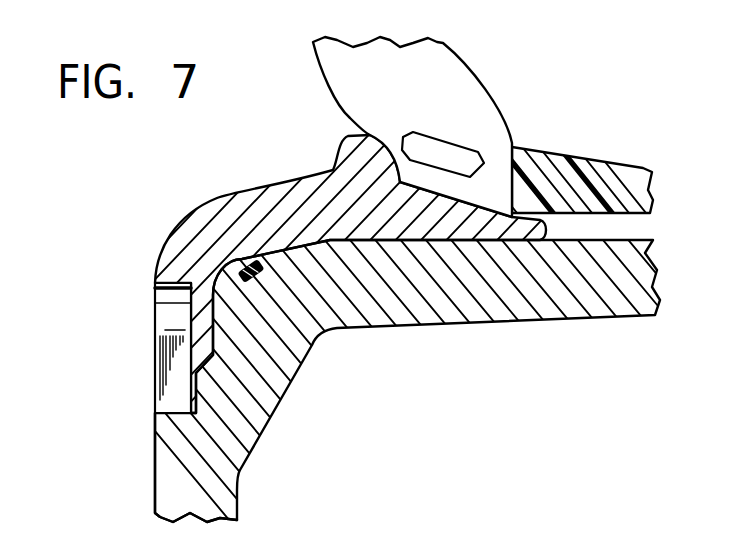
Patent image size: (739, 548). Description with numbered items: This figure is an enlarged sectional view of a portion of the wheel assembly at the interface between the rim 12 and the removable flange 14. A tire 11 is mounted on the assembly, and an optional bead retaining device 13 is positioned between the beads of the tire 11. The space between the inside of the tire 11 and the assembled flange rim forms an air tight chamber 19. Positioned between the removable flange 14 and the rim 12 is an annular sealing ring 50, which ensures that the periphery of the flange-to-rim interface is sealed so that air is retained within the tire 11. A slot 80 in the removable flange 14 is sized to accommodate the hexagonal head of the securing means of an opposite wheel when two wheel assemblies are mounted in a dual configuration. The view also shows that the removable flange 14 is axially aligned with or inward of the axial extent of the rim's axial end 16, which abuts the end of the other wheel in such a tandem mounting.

The tire 11 is at (345, 73).
The rim 12 is at (603, 317).
The bead retaining device 13 is at (598, 172).
The removable flange 14 is at (193, 213).
The axial end 16 is at (154, 483).
The air tight chamber 19 is at (553, 122).
The annular sealing ring 50 is at (250, 262).
The slot 80 is at (171, 318).